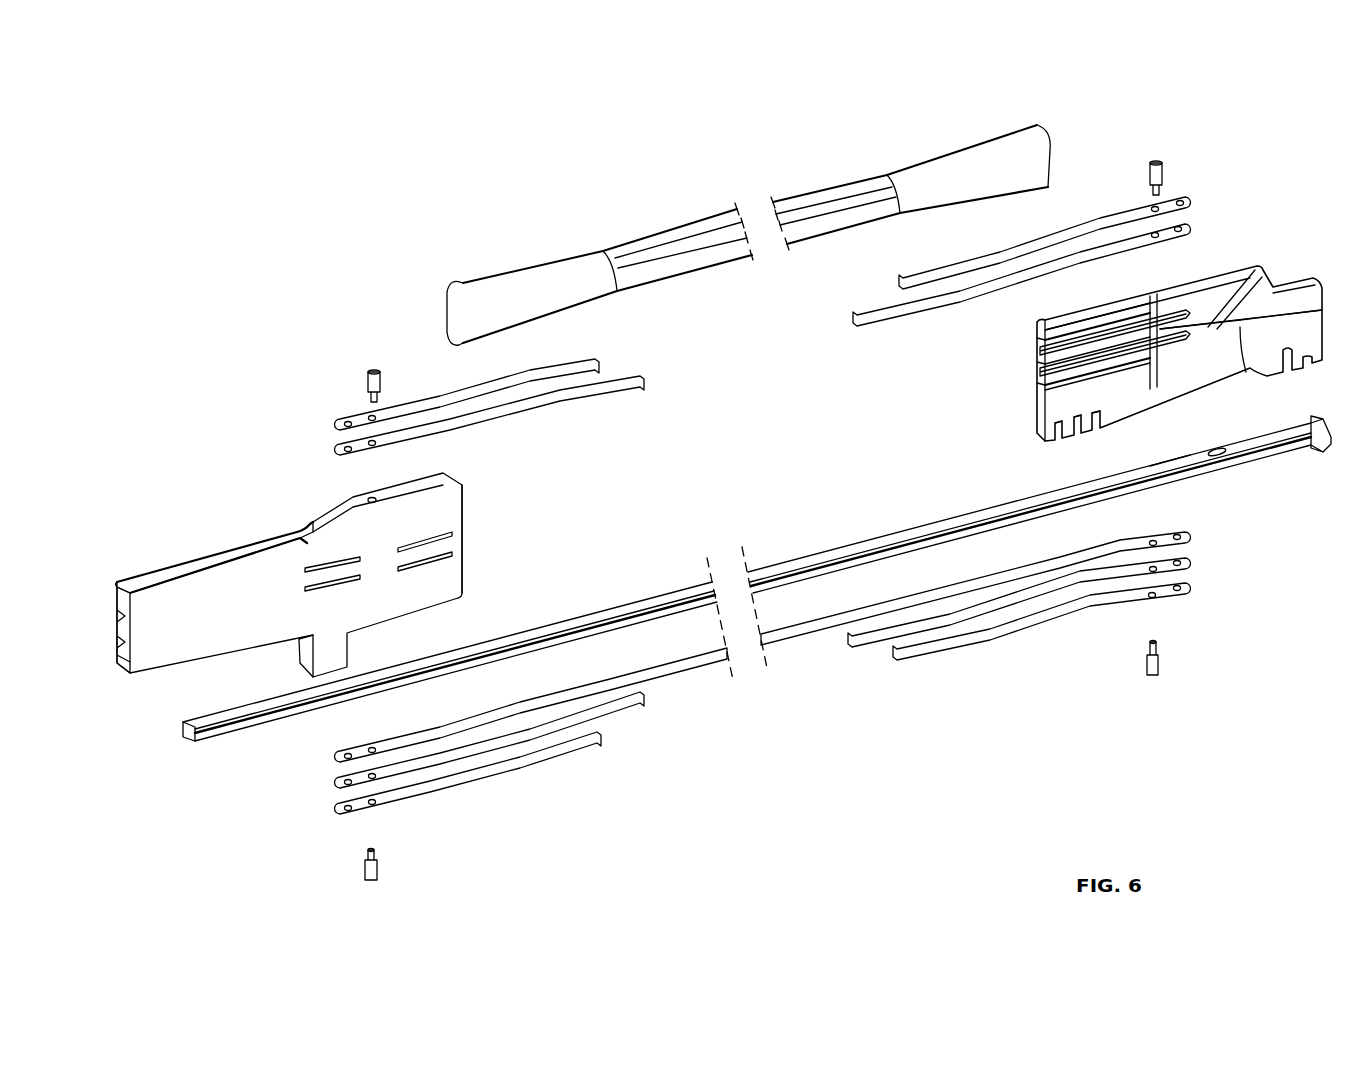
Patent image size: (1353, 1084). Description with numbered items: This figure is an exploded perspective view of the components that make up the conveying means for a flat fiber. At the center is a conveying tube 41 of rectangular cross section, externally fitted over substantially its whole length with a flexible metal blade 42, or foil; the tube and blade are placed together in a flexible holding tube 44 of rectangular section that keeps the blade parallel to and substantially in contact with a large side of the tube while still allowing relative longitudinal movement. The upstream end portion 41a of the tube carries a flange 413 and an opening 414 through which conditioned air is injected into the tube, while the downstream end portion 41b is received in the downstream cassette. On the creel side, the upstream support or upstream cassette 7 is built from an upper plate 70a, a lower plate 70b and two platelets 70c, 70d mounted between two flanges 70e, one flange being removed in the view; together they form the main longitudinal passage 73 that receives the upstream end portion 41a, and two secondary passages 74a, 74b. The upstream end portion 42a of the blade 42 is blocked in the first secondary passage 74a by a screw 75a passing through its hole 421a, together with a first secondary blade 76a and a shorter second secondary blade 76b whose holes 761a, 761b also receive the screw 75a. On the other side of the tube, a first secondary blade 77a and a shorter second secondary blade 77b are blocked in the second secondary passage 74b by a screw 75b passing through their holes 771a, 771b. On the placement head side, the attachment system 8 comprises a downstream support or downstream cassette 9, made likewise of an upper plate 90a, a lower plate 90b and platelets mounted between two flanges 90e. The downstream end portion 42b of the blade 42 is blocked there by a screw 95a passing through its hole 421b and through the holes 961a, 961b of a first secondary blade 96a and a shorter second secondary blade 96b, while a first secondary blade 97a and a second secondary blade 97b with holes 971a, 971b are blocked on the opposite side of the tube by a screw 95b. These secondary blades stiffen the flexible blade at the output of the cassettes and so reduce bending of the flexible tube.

The upstream support 7 is at (1143, 365).
The attachment system 8 is at (305, 592).
The downstream support 9 is at (243, 545).
The conveying tube 41 is at (760, 596).
The upstream end portion of the conveying tube 41a is at (1173, 487).
The downstream end portion of the conveying tube 41b is at (230, 742).
The flexible metal blade 42 is at (763, 639).
The upstream end portion of the flexible blade 42a is at (1048, 568).
The downstream end portion of the flexible blade 42b is at (438, 732).
The holding tube 44 is at (688, 228).
The upper plate 70a is at (1060, 324).
The lower plate 70b is at (1212, 375).
The platelet 70c is at (1038, 367).
The platelet 70d is at (1073, 423).
The flange 70e is at (1037, 343).
The main longitudinal passage 73 is at (1247, 367).
The first secondary passage 74a is at (1117, 377).
The second secondary passage 74b is at (1125, 333).
The screw 75a is at (1155, 680).
The screw 75b is at (1154, 162).
The first secondary blade 76a is at (855, 648).
The second secondary blade 76b is at (925, 660).
The first secondary blade 77a is at (857, 318).
The second secondary blade 77b is at (905, 278).
The upper plate 90a is at (135, 588).
The lower plate 90b is at (122, 668).
The flange 90e is at (462, 580).
The screw 95a is at (368, 885).
The screw 95b is at (368, 372).
The first secondary blade 96a is at (645, 710).
The second secondary blade 96b is at (588, 750).
The first secondary blade 97a is at (638, 378).
The second secondary blade 97b is at (585, 362).
The flange 413 is at (1320, 452).
The opening 414 is at (1225, 460).
The hole 421a is at (1150, 542).
The hole 421b is at (372, 745).
The hole 761a is at (1165, 570).
The hole 761b is at (1160, 600).
The hole 771a is at (1160, 240).
The hole 771b is at (1155, 205).
The hole 961a is at (380, 778).
The hole 961b is at (375, 805).
The hole 971a is at (374, 446).
The hole 971b is at (368, 418).